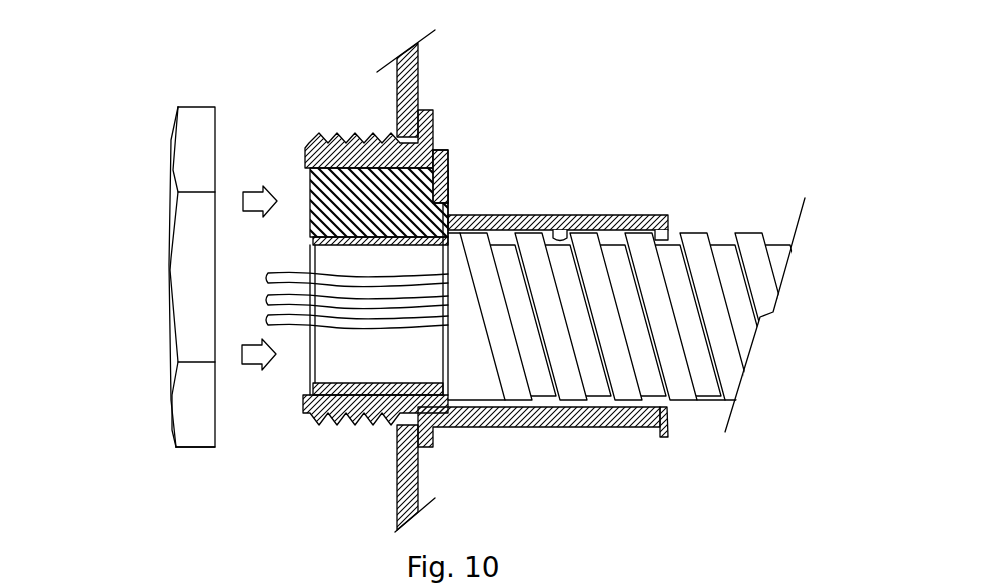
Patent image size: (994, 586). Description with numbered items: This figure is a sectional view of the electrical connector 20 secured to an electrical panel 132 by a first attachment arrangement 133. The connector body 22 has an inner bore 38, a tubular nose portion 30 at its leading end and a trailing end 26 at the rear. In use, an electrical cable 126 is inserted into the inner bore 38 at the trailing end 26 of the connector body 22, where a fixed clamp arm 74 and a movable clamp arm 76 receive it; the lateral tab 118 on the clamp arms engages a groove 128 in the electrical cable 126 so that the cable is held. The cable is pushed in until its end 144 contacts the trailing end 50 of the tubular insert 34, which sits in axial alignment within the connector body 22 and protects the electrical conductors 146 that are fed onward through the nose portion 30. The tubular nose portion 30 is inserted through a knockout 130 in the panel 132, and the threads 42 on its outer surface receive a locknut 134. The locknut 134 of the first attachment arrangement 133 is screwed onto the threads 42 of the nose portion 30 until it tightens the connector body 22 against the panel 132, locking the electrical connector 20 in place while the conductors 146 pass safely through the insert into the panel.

The electrical connector 20 is at (315, 90).
The connector body 22 is at (642, 428).
The trailing end 26 is at (675, 227).
The tubular nose portion 30 is at (310, 138).
The tubular insert 34 is at (448, 170).
The inner bore 38 is at (680, 234).
The threads 42 is at (330, 416).
The trailing end 50 is at (448, 200).
The fixed clamp arm 74 is at (530, 428).
The movable clamp arm 76 is at (565, 217).
The lateral tab 118 is at (553, 247).
The electrical cable 126 is at (713, 408).
The groove 128 is at (615, 243).
The knockout 130 is at (397, 427).
The panel 132 is at (408, 60).
The first attachment arrangement 133 is at (140, 169).
The locknut 134 is at (195, 447).
The end 144 is at (452, 265).
The electrical conductors 146 is at (383, 322).